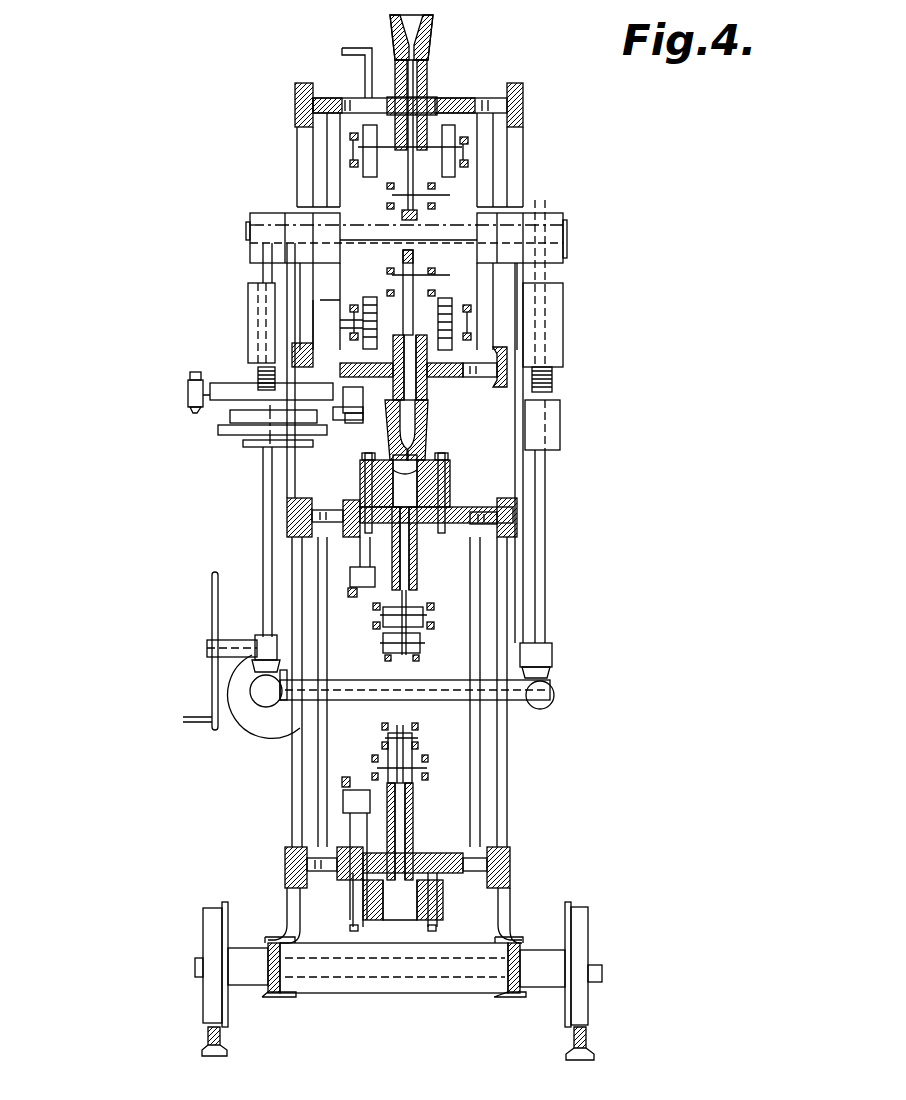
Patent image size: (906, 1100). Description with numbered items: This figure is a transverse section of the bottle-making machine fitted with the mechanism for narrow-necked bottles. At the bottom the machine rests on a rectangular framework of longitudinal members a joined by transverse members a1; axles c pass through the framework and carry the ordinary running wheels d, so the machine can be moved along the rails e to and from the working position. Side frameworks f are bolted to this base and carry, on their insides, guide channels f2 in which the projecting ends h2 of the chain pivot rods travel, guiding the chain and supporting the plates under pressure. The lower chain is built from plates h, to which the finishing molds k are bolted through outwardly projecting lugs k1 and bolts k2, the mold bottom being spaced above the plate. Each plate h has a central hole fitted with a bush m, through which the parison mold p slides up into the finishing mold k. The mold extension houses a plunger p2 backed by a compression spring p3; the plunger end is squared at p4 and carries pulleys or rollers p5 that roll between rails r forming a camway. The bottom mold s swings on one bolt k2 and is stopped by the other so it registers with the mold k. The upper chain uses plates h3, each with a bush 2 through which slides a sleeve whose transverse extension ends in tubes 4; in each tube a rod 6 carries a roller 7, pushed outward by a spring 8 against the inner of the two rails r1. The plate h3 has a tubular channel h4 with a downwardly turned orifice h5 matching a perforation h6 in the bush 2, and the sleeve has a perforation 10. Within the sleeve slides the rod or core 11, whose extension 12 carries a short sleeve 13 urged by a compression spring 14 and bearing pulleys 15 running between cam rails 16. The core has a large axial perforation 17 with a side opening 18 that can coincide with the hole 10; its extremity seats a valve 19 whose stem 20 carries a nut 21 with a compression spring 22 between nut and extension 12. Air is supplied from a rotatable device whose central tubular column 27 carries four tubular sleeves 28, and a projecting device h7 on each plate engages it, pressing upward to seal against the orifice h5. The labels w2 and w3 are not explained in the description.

The bush 2 is at (455, 305).
The tubes 4 is at (365, 310).
The rod 6 is at (360, 168).
The pulley or roller 7 is at (355, 146).
The spring 8 is at (350, 335).
The perforation 10 is at (345, 350).
The rod or core 11 is at (468, 290).
The extension 12 is at (420, 260).
The short sleeve 13 is at (437, 315).
The compression spring 14 is at (397, 310).
The pulleys 15 is at (350, 262).
The cam rails 16 is at (423, 262).
The large perforation 17 is at (460, 357).
The side opening 18 is at (393, 408).
The valve 19 is at (380, 440).
The valve stem 20 is at (423, 407).
The nut 21 is at (398, 253).
The compression spring 22 is at (443, 260).
The central tubular column 27 is at (267, 535).
The tubular sleeves 28 is at (230, 393).
The longitudinal members a is at (280, 988).
The transverse members a1 is at (387, 983).
The axles c is at (263, 958).
The running wheels d is at (215, 932).
The rails e is at (208, 1030).
The side frameworks f is at (523, 190).
The guide channels f2 is at (287, 523).
The plates h is at (493, 522).
The projecting ends h2 is at (548, 387).
The plates h3 is at (447, 377).
The tubular channel h4 is at (320, 368).
The downwardly turned orifice h5 is at (333, 390).
The perforation h6 is at (340, 382).
The projecting device h7 is at (358, 420).
The finishing molds k is at (432, 482).
The outwardly projecting lugs k1 is at (450, 497).
The bolts k2 is at (330, 523).
The bush m is at (417, 540).
The parison mold p is at (352, 598).
The plunger p2 is at (400, 603).
The compression spring p3 is at (390, 648).
The squared portion p4 is at (400, 653).
The pulleys or rollers p5 is at (378, 612).
The rails r is at (443, 655).
The rails r1 is at (352, 340).
The bottom mold s is at (482, 525).
The block w2 is at (343, 587).
The lever w3 is at (257, 683).